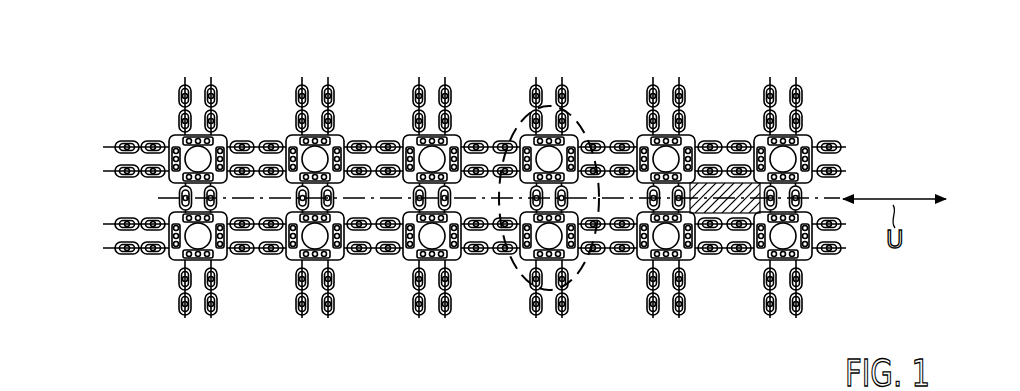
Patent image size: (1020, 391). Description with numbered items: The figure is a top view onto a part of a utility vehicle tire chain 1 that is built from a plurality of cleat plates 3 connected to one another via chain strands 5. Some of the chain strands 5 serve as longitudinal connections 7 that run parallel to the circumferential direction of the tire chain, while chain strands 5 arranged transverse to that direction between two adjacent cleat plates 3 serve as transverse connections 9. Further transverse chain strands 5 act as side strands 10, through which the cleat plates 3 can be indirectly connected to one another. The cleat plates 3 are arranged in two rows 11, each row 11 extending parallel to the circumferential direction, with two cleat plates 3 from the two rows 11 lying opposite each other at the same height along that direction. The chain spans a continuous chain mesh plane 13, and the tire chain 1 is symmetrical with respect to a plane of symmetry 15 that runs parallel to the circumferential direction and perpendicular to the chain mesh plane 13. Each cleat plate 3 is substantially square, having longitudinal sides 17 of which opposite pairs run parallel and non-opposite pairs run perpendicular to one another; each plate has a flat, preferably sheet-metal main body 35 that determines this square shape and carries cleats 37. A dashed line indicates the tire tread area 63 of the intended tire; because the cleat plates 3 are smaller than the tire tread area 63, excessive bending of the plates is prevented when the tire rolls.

The utility vehicle tire chain 1 is at (733, 60).
The cleat plate 3 is at (343, 133).
The chain strand 5 is at (290, 93).
The longitudinal connection 7 is at (392, 146).
The transverse connection 9 is at (283, 246).
The side strand 10 is at (306, 135).
The row 11 is at (94, 158).
The chain mesh plane 13 is at (719, 198).
The plane of symmetry 15 is at (607, 200).
The longitudinal side 17 is at (198, 135).
The main body 35 is at (808, 136).
The cleat 37 is at (785, 135).
The tire tread area 63 is at (517, 130).